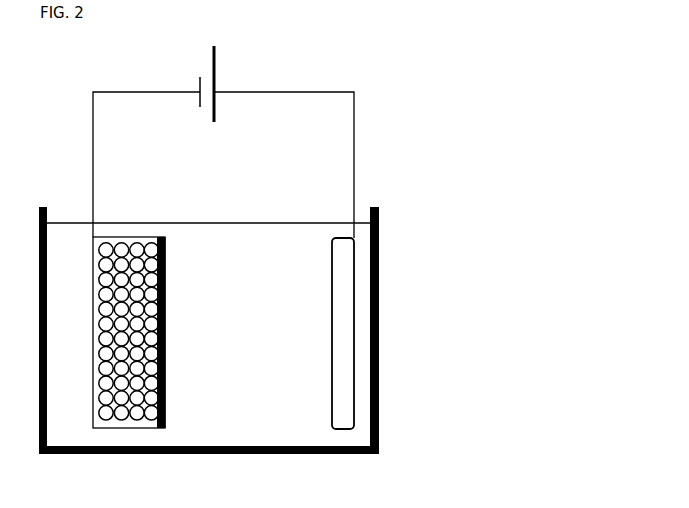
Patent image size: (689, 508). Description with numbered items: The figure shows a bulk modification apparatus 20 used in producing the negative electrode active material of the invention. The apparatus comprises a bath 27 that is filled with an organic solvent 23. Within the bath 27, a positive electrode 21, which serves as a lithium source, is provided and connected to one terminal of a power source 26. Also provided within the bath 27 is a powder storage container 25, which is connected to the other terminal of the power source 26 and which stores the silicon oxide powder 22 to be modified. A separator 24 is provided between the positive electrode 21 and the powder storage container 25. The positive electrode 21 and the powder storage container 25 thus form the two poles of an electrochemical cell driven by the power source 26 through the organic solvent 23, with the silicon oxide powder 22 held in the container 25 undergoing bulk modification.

The bulk modification apparatus 20 is at (369, 75).
The positive electrode 21 is at (340, 342).
The silicon oxide powder 22 is at (162, 397).
The organic solvent 23 is at (208, 243).
The separator 24 is at (165, 318).
The powder storage container 25 is at (122, 237).
The power source 26 is at (218, 105).
The bath 27 is at (172, 453).